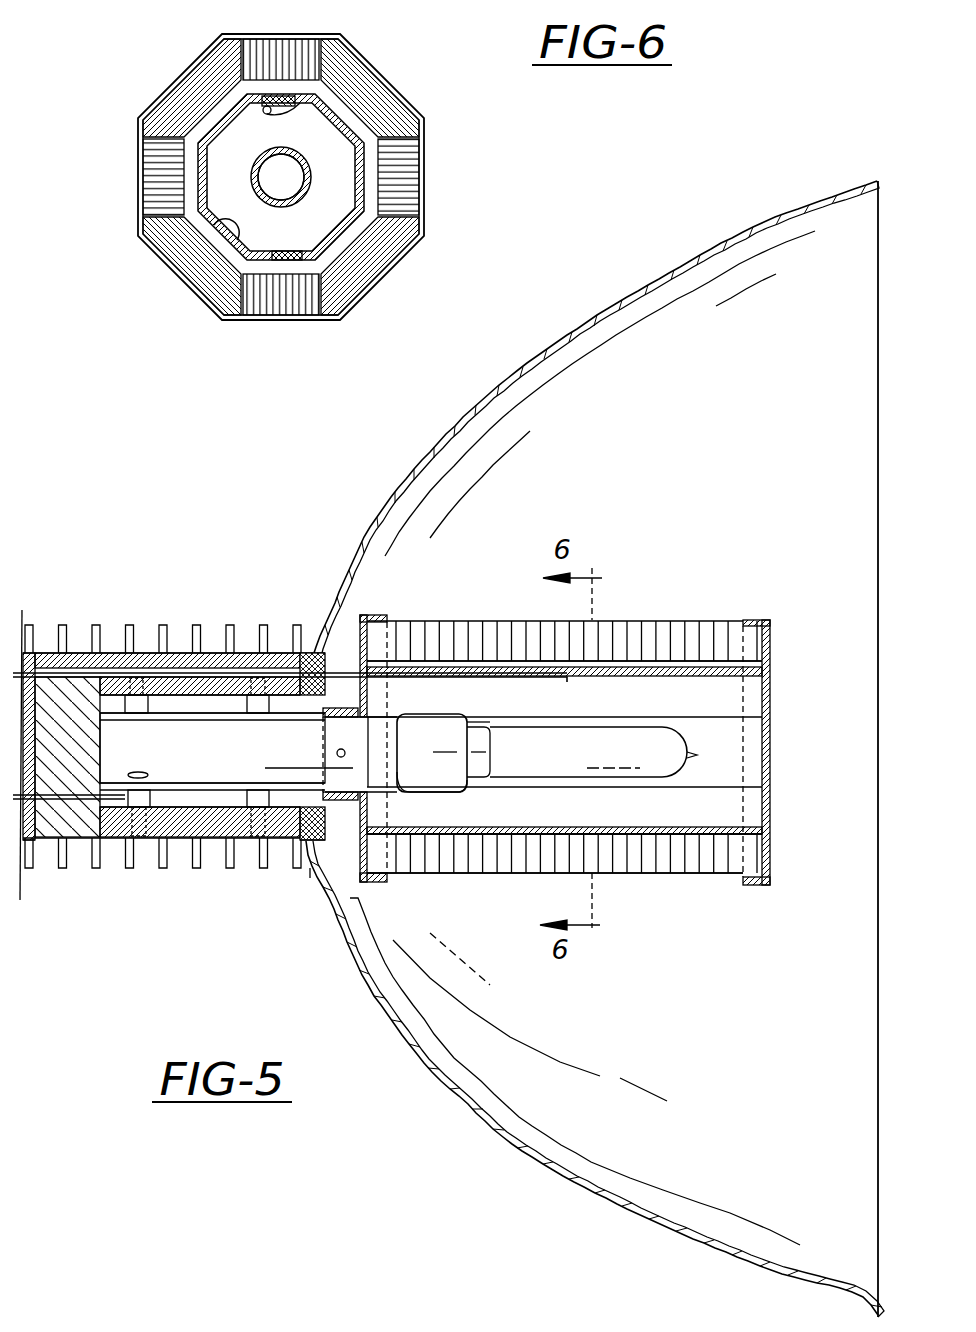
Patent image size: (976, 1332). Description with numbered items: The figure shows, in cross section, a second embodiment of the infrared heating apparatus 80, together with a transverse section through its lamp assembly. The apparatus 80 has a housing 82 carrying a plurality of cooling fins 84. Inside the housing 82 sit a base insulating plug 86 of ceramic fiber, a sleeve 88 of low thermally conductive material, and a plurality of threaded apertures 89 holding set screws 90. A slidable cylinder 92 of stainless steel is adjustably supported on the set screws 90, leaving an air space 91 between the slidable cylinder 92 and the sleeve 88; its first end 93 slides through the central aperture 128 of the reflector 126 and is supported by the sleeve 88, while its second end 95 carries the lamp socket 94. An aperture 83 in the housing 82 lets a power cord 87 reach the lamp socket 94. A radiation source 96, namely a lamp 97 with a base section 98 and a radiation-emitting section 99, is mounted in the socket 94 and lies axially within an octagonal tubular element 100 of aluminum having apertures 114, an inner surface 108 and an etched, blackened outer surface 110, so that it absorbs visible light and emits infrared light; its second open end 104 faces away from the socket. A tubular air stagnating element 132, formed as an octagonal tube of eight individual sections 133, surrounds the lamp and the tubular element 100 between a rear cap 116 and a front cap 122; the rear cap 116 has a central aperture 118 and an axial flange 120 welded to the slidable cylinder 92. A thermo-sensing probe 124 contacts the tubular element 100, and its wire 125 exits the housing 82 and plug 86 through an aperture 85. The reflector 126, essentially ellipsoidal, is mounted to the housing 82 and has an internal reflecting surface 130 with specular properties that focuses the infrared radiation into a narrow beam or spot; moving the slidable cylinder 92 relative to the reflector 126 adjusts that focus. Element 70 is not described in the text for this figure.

In FIG. 5, the lower cooling fins 70 is at (735, 880).
In FIG. 5, the infrared heating apparatus 80 is at (198, 553).
In FIG. 5, the housing 82 is at (222, 640).
In FIG. 5, the aperture 83 is at (50, 797).
In FIG. 5, the cooling fins 84 is at (170, 640).
In FIG. 5, the aperture 85 is at (70, 640).
In FIG. 5, the base insulating plug 86 is at (100, 723).
In FIG. 5, the power cord 87 is at (28, 912).
In FIG. 5, the sleeve 88 is at (178, 855).
In FIG. 5, the apertures 89 is at (140, 850).
In FIG. 5, the set screws 90 is at (110, 862).
In FIG. 5, the air space 91 is at (222, 800).
In FIG. 5, the slidable cylinder 92 is at (245, 845).
In FIG. 5, the first end 93 is at (150, 653).
In FIG. 5, the lamp socket 94 is at (435, 718).
In FIG. 5, the second end 95 is at (390, 717).
In FIG. 6, the radiation source 96 is at (350, 233).
In FIG. 5, the radiation source 96 is at (537, 784).
In FIG. 6, the lamp 97 is at (318, 200).
In FIG. 5, the lamp 97 is at (665, 780).
In FIG. 5, the base section 98 is at (495, 740).
In FIG. 5, the radiation-emitting section 99 is at (666, 627).
In FIG. 6, the tubular element 100 is at (398, 200).
In FIG. 5, the tubular element 100 is at (733, 627).
In FIG. 5, the second open end 104 is at (365, 883).
In FIG. 6, the inner surface 108 is at (200, 257).
In FIG. 6, the outer surface 110 is at (198, 192).
In FIG. 6, the apertures 114 is at (283, 260).
In FIG. 5, the apertures 114 is at (610, 625).
In FIG. 5, the rear cap 116 is at (372, 600).
In FIG. 5, the central aperture 118 is at (307, 834).
In FIG. 5, the axial flange 120 is at (328, 705).
In FIG. 5, the front cap 122 is at (787, 630).
In FIG. 6, the thermo-sensing probe 124 is at (282, 111).
In FIG. 5, the thermo-sensing probe 124 is at (482, 733).
In FIG. 5, the wire 125 is at (22, 610).
In FIG. 5, the reflector 126 is at (556, 340).
In FIG. 5, the central aperture 128 is at (326, 900).
In FIG. 5, the internal reflecting surface 130 is at (640, 1195).
In FIG. 6, the tubular air stagnating element 132 is at (414, 88).
In FIG. 5, the tubular air stagnating element 132 is at (700, 616).
In FIG. 6, the individual sections 133 is at (217, 72).